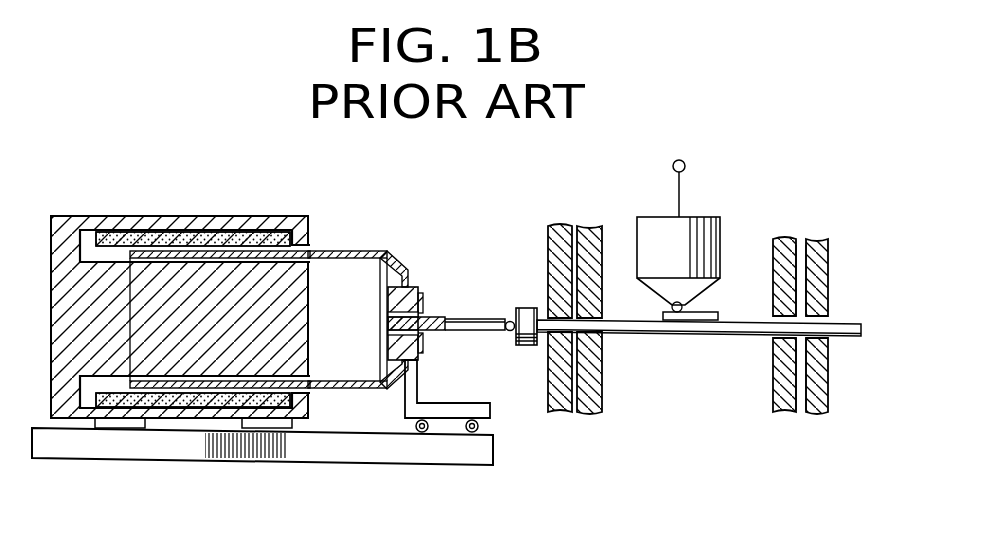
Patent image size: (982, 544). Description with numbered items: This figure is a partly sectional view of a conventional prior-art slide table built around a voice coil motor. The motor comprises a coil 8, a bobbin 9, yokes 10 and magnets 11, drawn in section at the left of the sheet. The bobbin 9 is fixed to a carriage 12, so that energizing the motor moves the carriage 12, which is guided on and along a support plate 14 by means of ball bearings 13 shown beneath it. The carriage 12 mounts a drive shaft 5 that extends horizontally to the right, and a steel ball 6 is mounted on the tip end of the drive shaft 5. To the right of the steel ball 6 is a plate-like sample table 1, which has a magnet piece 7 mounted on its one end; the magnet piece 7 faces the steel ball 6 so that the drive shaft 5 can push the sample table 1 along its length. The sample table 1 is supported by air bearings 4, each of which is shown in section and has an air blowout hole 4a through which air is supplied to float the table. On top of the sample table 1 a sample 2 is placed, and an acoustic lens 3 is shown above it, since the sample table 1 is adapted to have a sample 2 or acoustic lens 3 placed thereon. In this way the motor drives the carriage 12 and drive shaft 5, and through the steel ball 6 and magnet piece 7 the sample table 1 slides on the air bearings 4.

The sample table 1 is at (745, 323).
The sample 2 is at (702, 321).
The acoustic lens 3 is at (698, 230).
The air bearing 4 is at (602, 388).
The air blowout hole 4a is at (797, 415).
The drive shaft 5 is at (465, 318).
The steel ball 6 is at (512, 333).
The magnet piece 7 is at (527, 308).
The coil 8 is at (153, 250).
The bobbin 9 is at (347, 254).
The yoke 10 is at (213, 226).
The magnet 11 is at (243, 237).
The carriage 12 is at (415, 290).
The ball bearing 13 is at (432, 425).
The support plate 14 is at (82, 447).